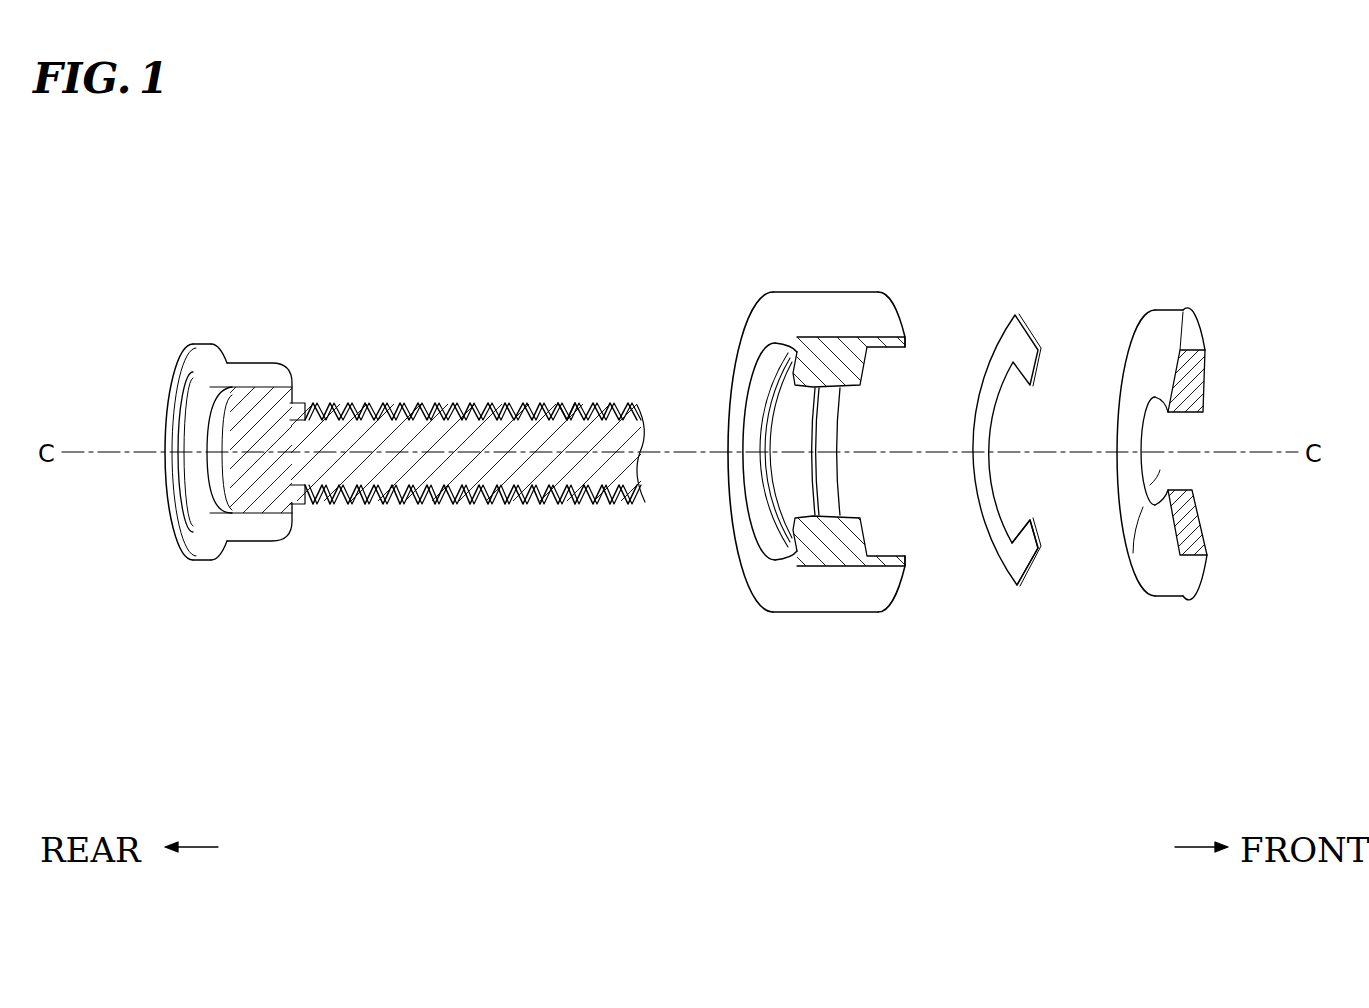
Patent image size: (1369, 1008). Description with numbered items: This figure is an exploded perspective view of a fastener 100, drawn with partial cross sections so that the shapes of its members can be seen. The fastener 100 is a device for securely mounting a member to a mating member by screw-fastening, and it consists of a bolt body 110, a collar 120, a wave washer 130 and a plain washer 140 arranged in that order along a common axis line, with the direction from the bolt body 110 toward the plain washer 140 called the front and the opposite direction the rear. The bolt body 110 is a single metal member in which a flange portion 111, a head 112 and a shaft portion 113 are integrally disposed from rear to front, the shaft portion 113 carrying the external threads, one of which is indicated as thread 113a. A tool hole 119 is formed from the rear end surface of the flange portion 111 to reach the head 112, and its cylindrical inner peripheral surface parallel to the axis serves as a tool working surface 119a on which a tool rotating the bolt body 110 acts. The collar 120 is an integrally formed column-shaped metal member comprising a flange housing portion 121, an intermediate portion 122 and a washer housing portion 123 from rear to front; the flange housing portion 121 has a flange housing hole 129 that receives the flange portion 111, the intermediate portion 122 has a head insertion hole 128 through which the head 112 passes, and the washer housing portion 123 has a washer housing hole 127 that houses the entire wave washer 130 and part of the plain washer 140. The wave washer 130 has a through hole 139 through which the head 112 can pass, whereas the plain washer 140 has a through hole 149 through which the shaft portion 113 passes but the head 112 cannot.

The fastener 100 is at (290, 141).
The bolt body 110 is at (380, 323).
The flange portion 111 is at (190, 517).
The head 112 is at (266, 522).
The shaft portion 113 is at (460, 506).
The thread 113a is at (568, 398).
The tool hole 119 is at (178, 478).
The tool working surface 119a is at (188, 420).
The collar 120 is at (790, 250).
The flange housing portion 121 is at (765, 543).
The intermediate portion 122 is at (852, 562).
The washer housing portion 123 is at (902, 586).
The washer housing hole 127 is at (903, 330).
The head insertion hole 128 is at (834, 397).
The flange housing hole 129 is at (762, 380).
The wave washer 130 is at (1035, 320).
The through hole 139 is at (1003, 568).
The plain washer 140 is at (1184, 318).
The through hole 149 is at (1138, 492).